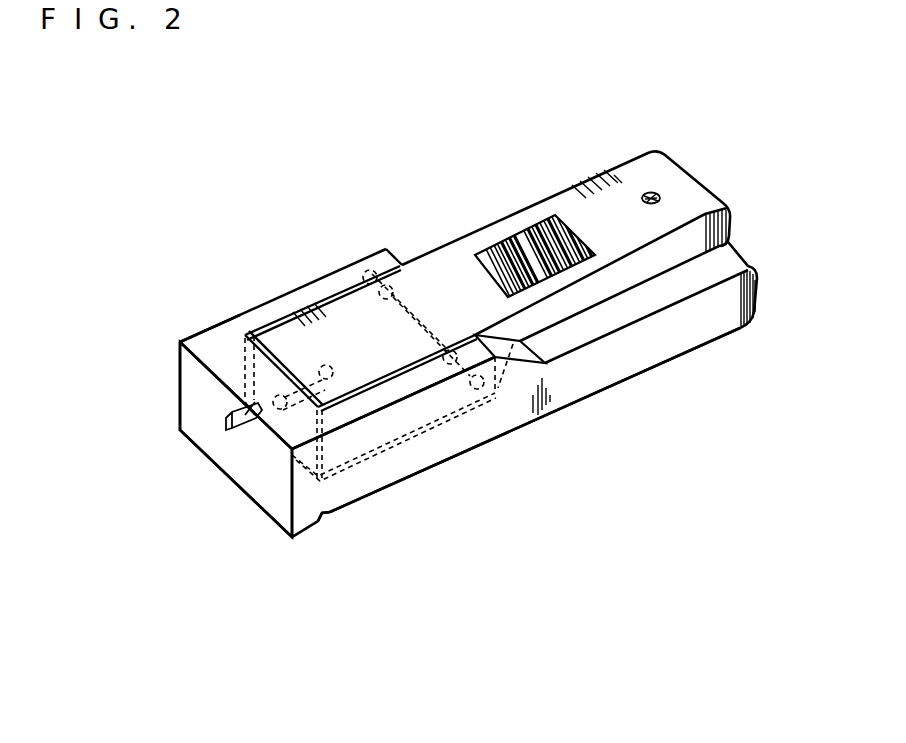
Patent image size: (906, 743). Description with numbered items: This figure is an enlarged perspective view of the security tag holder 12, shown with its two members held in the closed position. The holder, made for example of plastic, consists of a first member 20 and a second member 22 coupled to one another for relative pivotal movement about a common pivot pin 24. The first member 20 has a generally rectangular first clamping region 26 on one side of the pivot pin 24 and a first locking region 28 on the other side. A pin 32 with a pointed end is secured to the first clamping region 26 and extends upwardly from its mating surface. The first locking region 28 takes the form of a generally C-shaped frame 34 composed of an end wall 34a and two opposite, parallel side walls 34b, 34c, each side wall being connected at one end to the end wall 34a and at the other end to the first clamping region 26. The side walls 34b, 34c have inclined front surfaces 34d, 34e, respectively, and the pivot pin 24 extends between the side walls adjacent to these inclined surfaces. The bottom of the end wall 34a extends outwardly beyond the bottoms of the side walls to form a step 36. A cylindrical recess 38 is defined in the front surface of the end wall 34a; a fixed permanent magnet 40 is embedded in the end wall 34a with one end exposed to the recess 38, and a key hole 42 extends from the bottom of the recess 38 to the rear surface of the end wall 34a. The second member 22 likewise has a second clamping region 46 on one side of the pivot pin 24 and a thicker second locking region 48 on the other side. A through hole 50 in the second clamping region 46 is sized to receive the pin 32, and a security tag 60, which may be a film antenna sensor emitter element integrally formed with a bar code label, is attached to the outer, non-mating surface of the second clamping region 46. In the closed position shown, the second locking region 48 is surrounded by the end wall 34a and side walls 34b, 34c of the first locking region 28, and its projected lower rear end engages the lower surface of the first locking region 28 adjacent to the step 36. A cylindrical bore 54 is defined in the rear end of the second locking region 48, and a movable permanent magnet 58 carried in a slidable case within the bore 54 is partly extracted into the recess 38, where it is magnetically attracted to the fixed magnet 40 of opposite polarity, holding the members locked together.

The security tag holder 12 is at (468, 504).
The first member 20 is at (712, 307).
The second member 22 is at (718, 228).
The pivot pin 24 is at (497, 392).
The first clamping region 26 is at (603, 317).
The first locking region 28 is at (210, 345).
The pin 32 is at (656, 192).
The C-shaped frame 34 is at (258, 440).
The end wall 34a is at (220, 353).
The side wall 34b is at (268, 306).
The side wall 34c is at (400, 382).
The inclined front surface 34d is at (406, 262).
The inclined front surface 34e is at (535, 346).
The step 36 is at (325, 517).
The cylindrical recess 38 is at (265, 438).
The fixed permanent magnet 40 is at (277, 397).
The key hole 42 is at (218, 426).
The second clamping region 46 is at (697, 203).
The second locking region 48 is at (347, 317).
The through hole 50 is at (651, 193).
The cylindrical bore 54 is at (333, 362).
The movable permanent magnet 58 is at (273, 430).
The security tag 60 is at (525, 250).